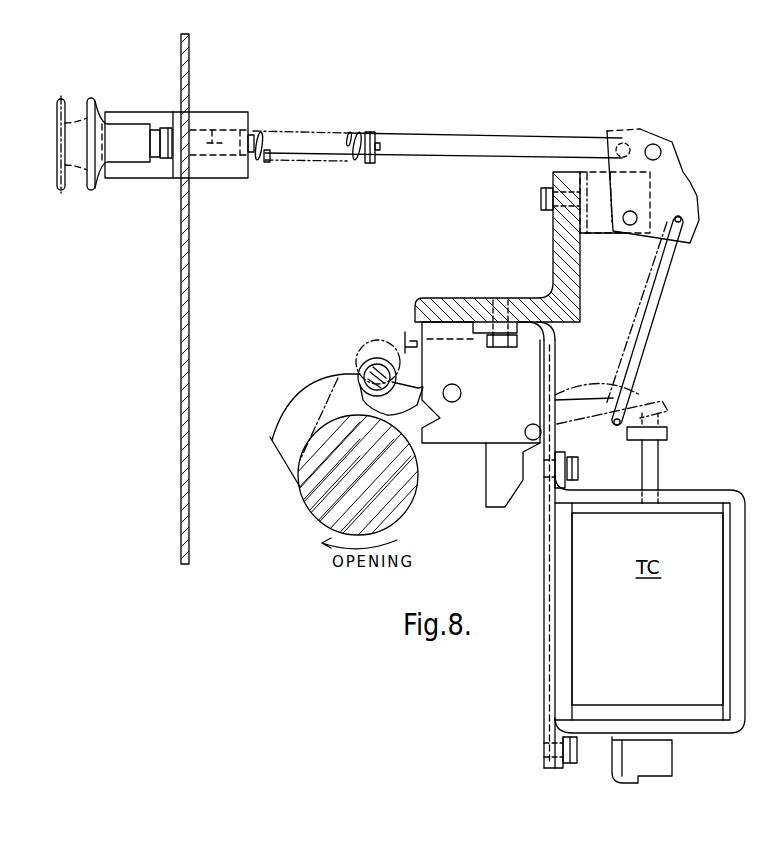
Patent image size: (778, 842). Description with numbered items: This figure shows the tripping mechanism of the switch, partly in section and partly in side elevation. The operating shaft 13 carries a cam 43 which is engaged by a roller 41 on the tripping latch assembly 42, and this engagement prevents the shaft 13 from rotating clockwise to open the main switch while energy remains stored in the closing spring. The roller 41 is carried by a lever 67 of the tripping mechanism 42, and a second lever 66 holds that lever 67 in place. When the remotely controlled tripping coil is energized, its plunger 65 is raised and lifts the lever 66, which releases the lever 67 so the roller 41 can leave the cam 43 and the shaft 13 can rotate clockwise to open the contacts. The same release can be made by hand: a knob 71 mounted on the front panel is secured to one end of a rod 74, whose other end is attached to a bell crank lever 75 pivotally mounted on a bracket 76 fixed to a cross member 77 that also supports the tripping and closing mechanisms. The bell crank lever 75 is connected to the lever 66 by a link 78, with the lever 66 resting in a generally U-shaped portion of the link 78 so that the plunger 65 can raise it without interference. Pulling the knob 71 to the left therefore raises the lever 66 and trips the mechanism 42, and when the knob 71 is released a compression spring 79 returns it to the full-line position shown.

The operating shaft 13 is at (413, 490).
The roller 41 is at (361, 373).
The tripping latch assembly 42 is at (506, 384).
The cam 43 is at (318, 386).
The plunger 65 is at (660, 469).
The lever 66 is at (567, 424).
The lever 67 is at (406, 343).
The knob 71 is at (133, 163).
The rod 74 is at (451, 156).
The bell crank lever 75 is at (675, 147).
The bracket 76 is at (600, 235).
The cross member 77 is at (553, 257).
The link 78 is at (658, 315).
The compression spring 79 is at (260, 132).